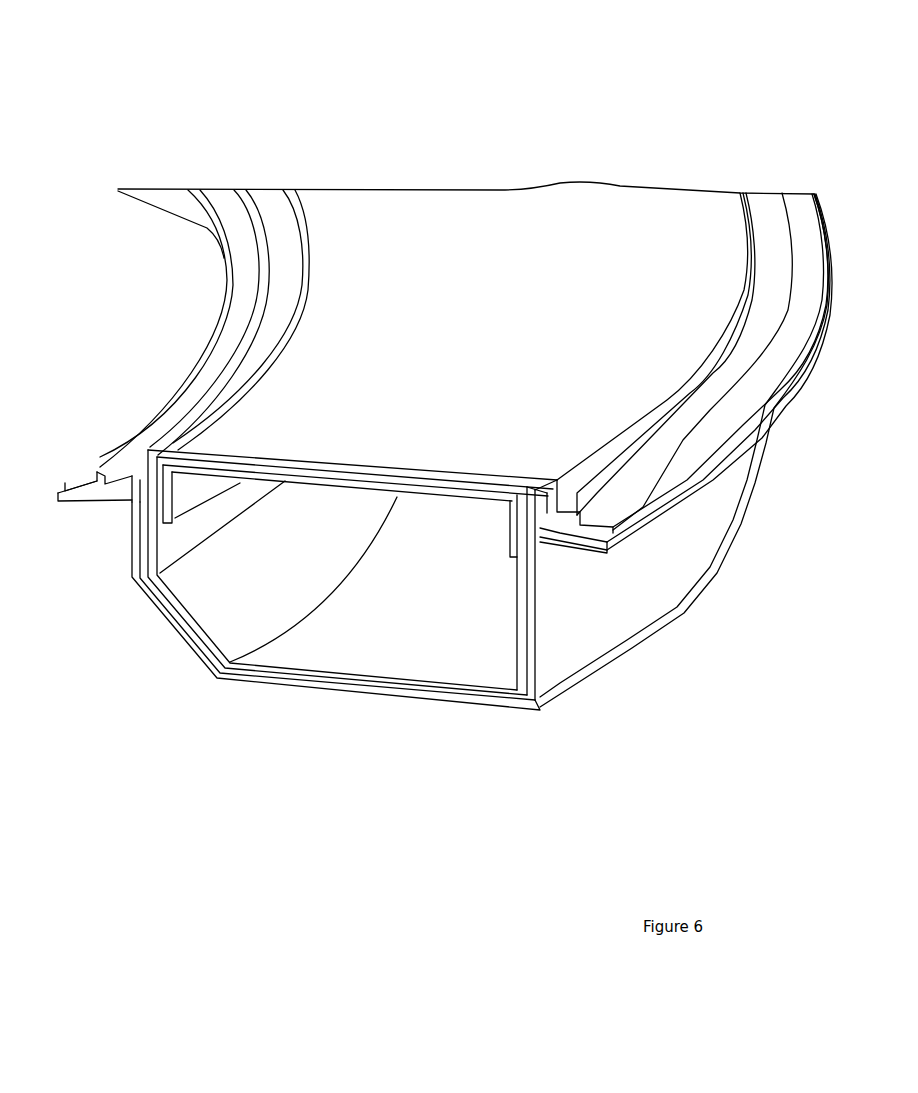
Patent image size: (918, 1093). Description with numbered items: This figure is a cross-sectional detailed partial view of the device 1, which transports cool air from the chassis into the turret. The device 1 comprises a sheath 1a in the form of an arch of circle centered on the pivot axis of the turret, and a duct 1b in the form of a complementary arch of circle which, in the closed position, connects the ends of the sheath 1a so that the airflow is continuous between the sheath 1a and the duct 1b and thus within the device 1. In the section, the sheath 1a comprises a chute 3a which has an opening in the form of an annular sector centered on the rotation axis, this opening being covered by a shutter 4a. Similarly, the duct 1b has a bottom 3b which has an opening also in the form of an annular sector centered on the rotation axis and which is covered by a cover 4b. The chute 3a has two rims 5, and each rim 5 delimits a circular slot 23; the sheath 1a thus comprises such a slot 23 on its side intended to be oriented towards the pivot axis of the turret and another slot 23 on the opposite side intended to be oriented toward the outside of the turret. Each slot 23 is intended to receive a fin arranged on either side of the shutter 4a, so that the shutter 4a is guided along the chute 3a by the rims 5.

The device 1 is at (500, 158).
The sheath 1a is at (333, 710).
The duct 1b is at (424, 655).
The chute 3a is at (585, 607).
The bottom 3b is at (458, 658).
The shutter 4a is at (292, 367).
The cover 4b is at (178, 490).
The rim 5 is at (187, 410).
The circular slot 23 is at (109, 496).